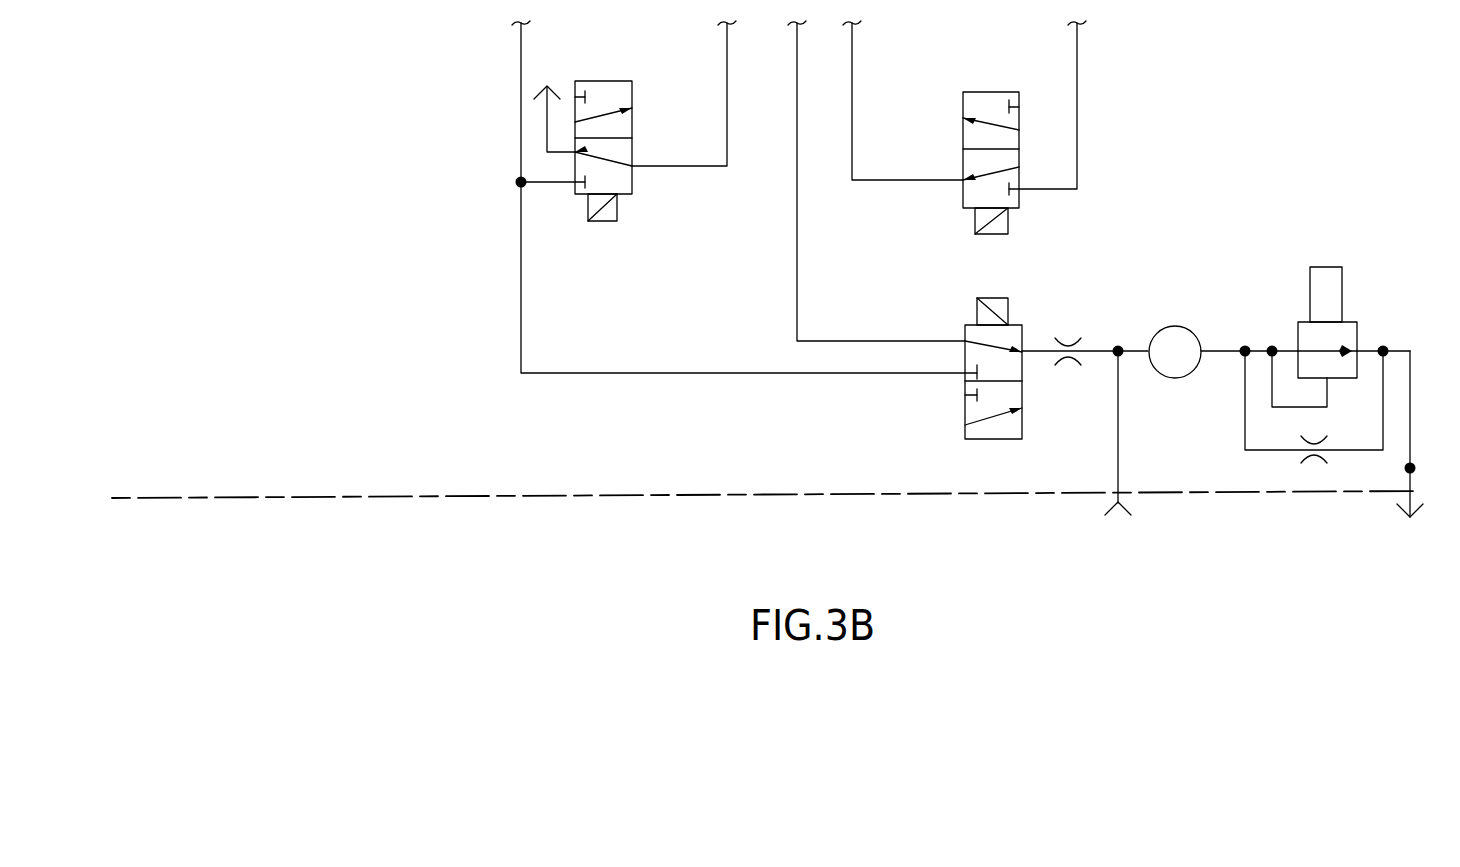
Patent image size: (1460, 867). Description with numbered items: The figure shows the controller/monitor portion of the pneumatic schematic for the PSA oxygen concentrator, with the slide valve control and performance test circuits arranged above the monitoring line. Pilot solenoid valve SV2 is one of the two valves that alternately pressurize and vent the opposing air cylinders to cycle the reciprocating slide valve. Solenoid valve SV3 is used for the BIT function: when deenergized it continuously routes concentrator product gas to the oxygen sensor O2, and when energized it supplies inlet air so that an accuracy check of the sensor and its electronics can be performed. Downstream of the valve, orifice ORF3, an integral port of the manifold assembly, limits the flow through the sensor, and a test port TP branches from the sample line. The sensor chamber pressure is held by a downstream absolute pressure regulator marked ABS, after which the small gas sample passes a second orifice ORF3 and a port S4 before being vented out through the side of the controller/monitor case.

The pilot solenoid valve SV2 is at (615, 124).
The solenoid valve SV3 is at (969, 178).
The built-in test BIT is at (992, 388).
The orifice ORF3 is at (1192, 414).
The test port TP is at (1117, 450).
The oxygen sensor O2 is at (1180, 384).
The absolute pressure regulator ABS is at (1344, 330).
The pressure sensor S4 is at (1422, 451).